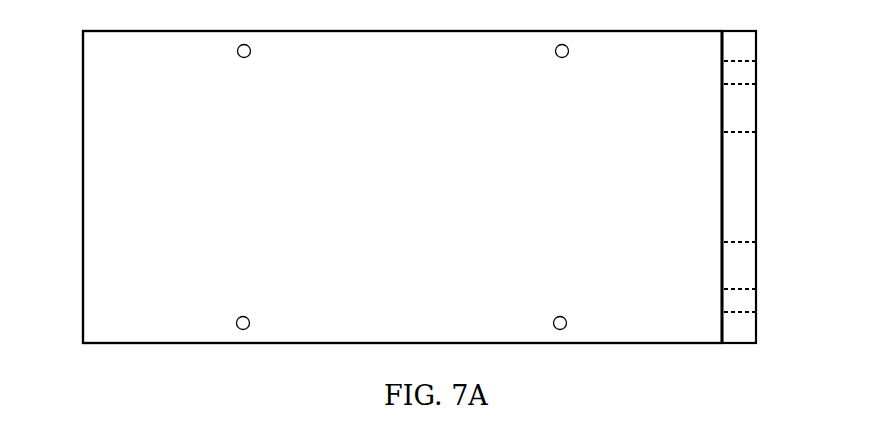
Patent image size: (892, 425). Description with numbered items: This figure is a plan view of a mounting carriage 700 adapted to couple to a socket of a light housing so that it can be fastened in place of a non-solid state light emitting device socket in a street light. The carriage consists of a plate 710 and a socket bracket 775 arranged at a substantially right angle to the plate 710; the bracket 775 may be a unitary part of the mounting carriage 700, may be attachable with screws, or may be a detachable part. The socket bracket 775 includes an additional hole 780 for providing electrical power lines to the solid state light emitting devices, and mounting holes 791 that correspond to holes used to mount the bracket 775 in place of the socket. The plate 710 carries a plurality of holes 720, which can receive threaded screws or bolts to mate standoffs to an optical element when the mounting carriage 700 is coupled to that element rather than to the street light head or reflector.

The mounting carriage 700 is at (37, 24).
The plate 710 is at (83, 85).
The holes 720 is at (555, 51).
The socket bracket 775 is at (730, 345).
The additional hole 780 is at (756, 163).
The mounting holes 791 is at (756, 71).